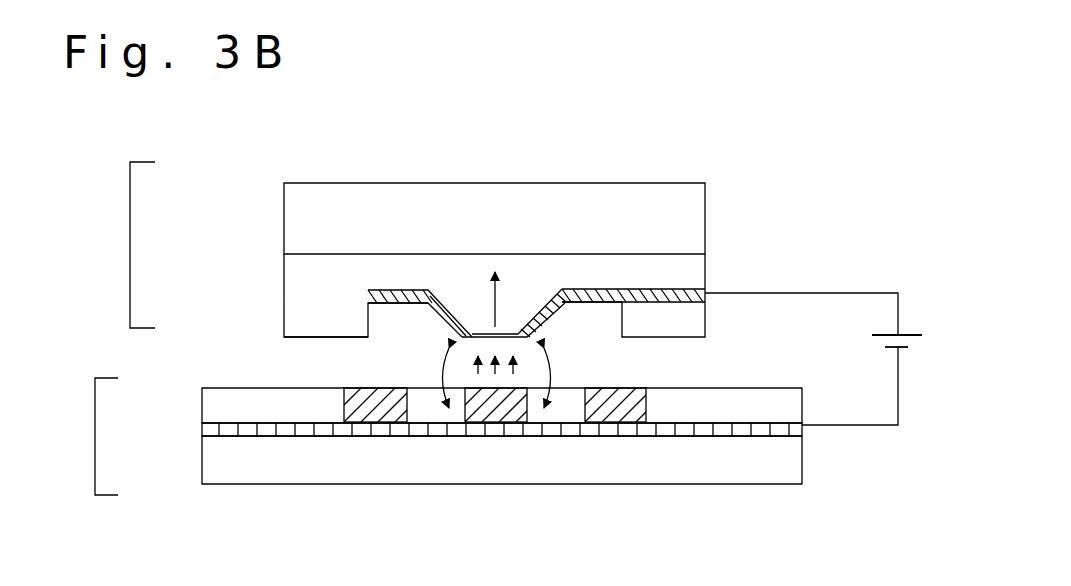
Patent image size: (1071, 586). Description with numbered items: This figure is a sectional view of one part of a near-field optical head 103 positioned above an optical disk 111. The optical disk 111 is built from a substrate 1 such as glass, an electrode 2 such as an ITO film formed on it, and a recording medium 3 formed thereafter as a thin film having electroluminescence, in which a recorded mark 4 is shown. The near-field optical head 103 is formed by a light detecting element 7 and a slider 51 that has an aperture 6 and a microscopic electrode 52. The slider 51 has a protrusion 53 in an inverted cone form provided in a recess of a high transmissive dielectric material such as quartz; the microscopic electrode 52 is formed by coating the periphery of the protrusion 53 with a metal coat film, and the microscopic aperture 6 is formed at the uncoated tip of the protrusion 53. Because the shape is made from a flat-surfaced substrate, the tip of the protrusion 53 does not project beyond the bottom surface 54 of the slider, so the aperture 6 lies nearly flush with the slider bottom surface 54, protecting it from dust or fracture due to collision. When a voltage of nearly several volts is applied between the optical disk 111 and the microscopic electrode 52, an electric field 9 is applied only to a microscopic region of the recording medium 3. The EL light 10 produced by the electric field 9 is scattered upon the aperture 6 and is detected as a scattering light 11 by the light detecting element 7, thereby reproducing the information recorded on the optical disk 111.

The substrate 1 is at (233, 473).
The electrode 2 is at (213, 428).
The recording medium 3 is at (220, 402).
The recorded mark 4 is at (340, 393).
The aperture 6 is at (498, 330).
The light detecting element 7 is at (298, 202).
The electric field 9 is at (555, 362).
The EL light 10 is at (500, 373).
The scattering light 11 is at (500, 283).
The slider 51 is at (298, 305).
The microscopic electrode 52 is at (678, 290).
The protrusion 53 is at (447, 295).
The bottom surface of the slider 54 is at (340, 337).
The near-field optical head 103 is at (116, 245).
The optical disk 111 is at (83, 436).